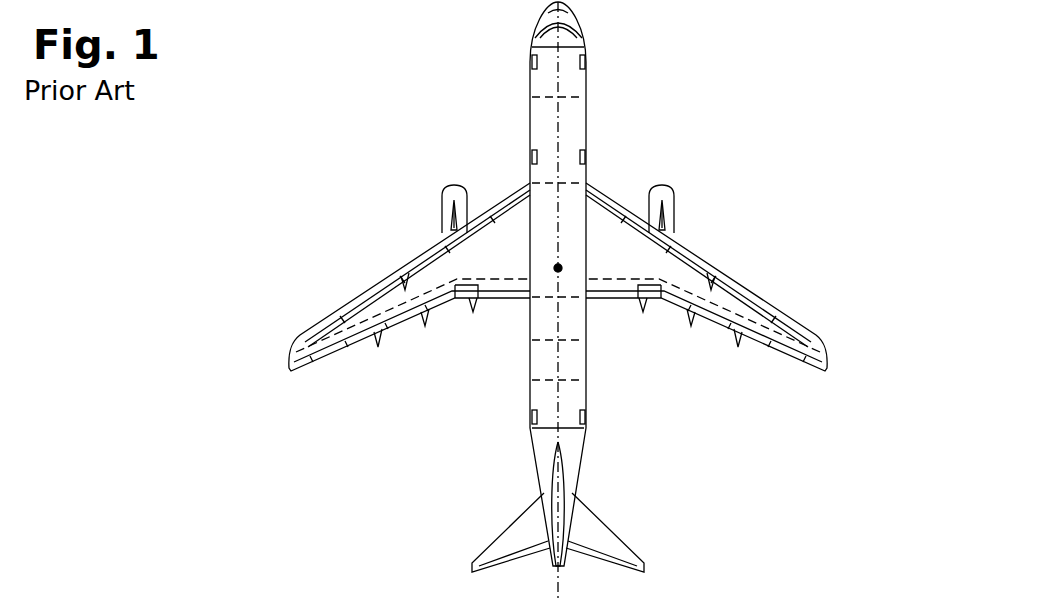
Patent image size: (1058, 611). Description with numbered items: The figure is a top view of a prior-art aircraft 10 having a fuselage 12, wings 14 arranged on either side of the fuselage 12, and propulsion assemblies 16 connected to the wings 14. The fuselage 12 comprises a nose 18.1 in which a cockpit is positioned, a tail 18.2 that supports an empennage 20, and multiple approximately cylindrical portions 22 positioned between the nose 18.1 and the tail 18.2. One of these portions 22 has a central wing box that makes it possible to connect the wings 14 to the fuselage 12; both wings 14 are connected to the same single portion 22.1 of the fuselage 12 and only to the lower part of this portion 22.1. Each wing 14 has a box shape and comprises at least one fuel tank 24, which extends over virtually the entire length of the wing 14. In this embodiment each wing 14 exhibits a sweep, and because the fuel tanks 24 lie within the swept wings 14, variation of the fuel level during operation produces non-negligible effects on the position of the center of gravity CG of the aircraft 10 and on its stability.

The aircraft 10 is at (755, 99).
The fuselage 12 is at (588, 86).
The wings 14 is at (352, 293).
The propulsion assemblies 16 is at (441, 200).
The nose 18.1 is at (582, 18).
The tail 18.2 is at (572, 445).
The empennage 20 is at (596, 516).
The approximately cylindrical portions 22 is at (544, 112).
The single portion of the fuselage 22.1 is at (548, 198).
The fuel tank 24 is at (397, 268).
The center of gravity CG is at (562, 266).